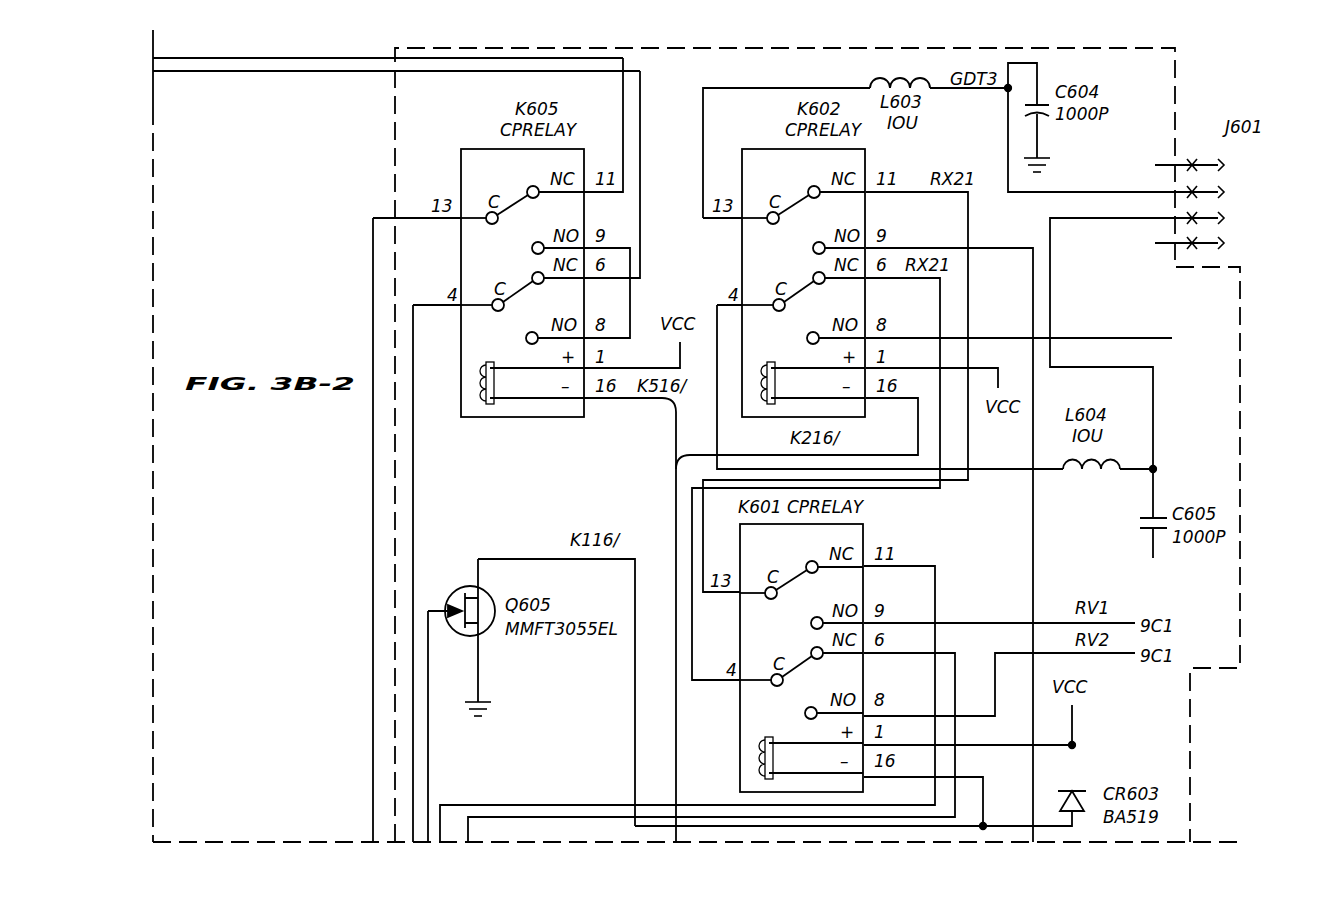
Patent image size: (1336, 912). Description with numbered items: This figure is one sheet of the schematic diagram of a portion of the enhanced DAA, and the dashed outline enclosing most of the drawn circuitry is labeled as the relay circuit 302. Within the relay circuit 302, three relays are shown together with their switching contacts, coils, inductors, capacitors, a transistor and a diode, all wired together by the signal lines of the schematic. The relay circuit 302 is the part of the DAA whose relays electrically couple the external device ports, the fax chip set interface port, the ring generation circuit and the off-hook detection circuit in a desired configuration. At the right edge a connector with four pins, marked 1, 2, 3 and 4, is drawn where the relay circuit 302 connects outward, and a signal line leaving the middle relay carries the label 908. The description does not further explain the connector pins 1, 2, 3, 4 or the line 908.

The relay circuit 302 is at (394, 158).
The RY22X signal line 908 is at (1038, 331).
The connector J601 pin 1 (G3) 1 is at (1214, 165).
The connector J601 pin 2 (FAX) 2 is at (1228, 192).
The connector J601 pin 3 is at (1209, 219).
The connector J601 pin 4 is at (1199, 245).